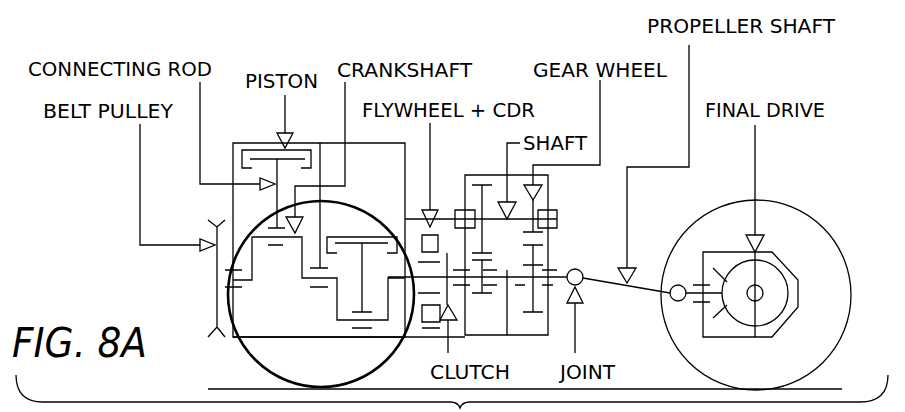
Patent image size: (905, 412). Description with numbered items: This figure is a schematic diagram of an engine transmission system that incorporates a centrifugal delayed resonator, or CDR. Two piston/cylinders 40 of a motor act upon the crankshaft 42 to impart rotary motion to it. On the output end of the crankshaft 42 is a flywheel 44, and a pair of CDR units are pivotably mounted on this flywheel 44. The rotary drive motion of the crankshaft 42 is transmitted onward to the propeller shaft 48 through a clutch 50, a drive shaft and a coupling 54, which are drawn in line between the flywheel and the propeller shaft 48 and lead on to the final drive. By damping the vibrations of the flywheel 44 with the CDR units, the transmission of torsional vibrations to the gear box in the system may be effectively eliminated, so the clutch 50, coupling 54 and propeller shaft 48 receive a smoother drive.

The piston/cylinder 40 is at (306, 148).
The crankshaft 42 is at (300, 262).
The flywheel 44 is at (422, 321).
The propeller shaft 48 is at (638, 290).
The clutch 50 is at (455, 313).
The coupling 54 is at (578, 270).